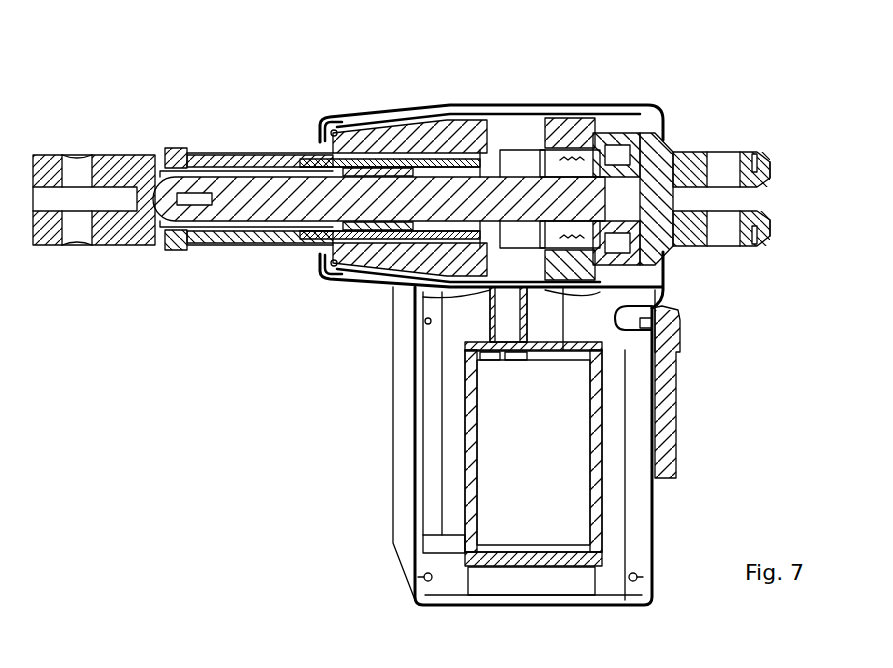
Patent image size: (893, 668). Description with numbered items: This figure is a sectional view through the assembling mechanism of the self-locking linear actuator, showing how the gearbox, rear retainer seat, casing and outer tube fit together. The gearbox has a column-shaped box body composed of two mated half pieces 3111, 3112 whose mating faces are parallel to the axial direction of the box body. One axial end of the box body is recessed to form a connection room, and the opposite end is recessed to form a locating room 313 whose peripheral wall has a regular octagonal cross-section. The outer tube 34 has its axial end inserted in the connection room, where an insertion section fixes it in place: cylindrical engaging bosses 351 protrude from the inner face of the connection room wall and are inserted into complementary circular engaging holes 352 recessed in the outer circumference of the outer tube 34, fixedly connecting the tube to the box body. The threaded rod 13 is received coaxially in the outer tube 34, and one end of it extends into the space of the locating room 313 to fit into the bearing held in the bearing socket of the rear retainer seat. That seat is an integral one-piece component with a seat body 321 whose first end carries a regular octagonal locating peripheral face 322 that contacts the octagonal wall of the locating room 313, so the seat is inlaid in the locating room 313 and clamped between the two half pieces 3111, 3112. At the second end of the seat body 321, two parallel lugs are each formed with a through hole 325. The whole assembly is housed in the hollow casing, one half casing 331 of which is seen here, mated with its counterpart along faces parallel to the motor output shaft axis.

The outer tube 34 is at (233, 152).
The threaded rod 13 is at (295, 190).
The engaging bosses 351 is at (372, 142).
The engaging holes 352 is at (333, 122).
The half piece 3111 is at (417, 135).
The half piece 3112 is at (423, 280).
The half casing 331 is at (510, 104).
The locating room 313 is at (625, 150).
The seat body 321 is at (673, 150).
The through hole 325 is at (726, 165).
The locating peripheral face 322 is at (772, 165).